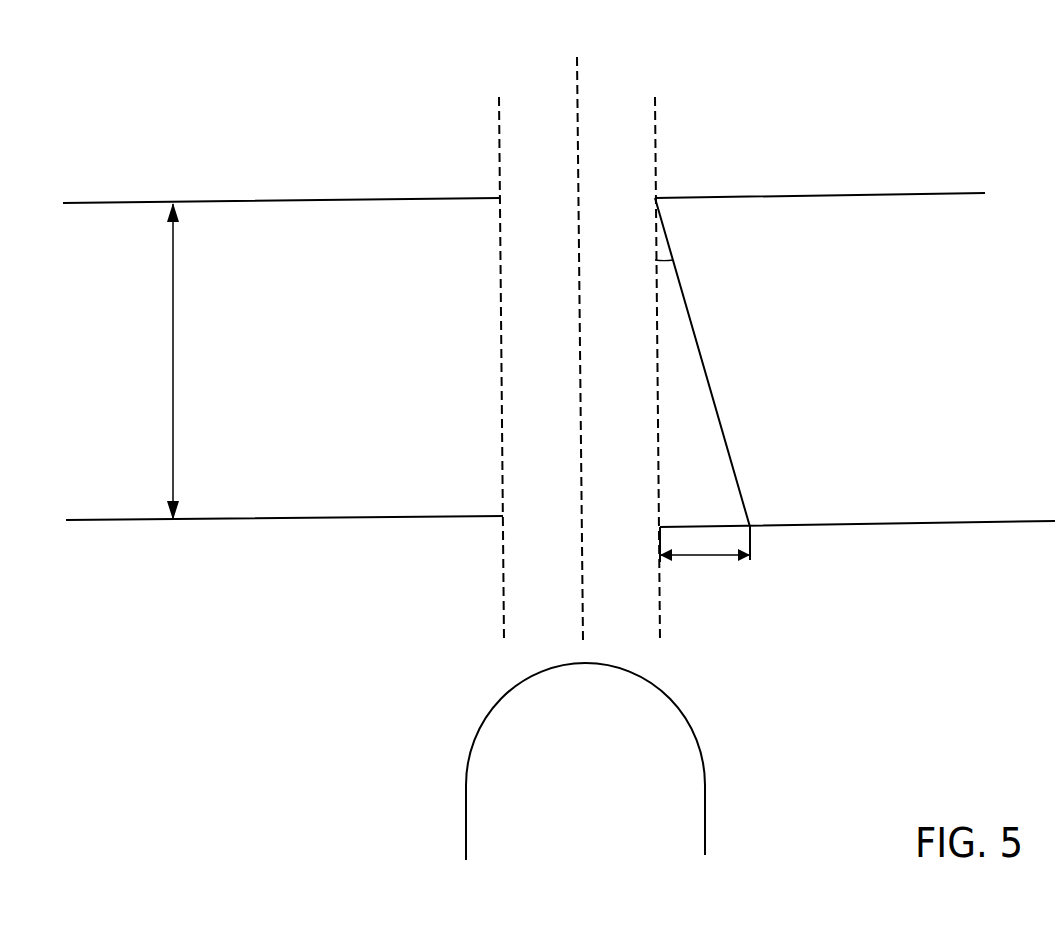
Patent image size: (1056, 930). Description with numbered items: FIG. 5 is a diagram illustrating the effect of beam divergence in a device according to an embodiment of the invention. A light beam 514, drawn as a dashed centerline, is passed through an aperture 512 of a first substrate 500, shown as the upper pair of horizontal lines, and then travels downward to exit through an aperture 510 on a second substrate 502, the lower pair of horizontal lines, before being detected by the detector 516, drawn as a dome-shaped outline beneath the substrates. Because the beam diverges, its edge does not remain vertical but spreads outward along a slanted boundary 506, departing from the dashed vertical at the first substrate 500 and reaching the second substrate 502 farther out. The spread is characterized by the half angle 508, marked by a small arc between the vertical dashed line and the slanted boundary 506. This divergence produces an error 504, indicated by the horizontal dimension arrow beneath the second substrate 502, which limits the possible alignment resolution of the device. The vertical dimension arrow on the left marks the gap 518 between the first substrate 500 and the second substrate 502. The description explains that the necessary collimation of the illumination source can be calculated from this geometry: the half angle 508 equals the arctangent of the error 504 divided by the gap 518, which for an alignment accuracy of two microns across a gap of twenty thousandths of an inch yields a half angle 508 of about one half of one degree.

The first substrate 500 is at (888, 193).
The second substrate 502 is at (938, 522).
The error 504 is at (703, 556).
The tapered sidewall 506 is at (710, 385).
The half angle 508 is at (672, 262).
The aperture 510 is at (511, 528).
The aperture 512 is at (510, 172).
The light beam 514 is at (577, 57).
The detector 516 is at (703, 760).
The gap 518 is at (172, 333).